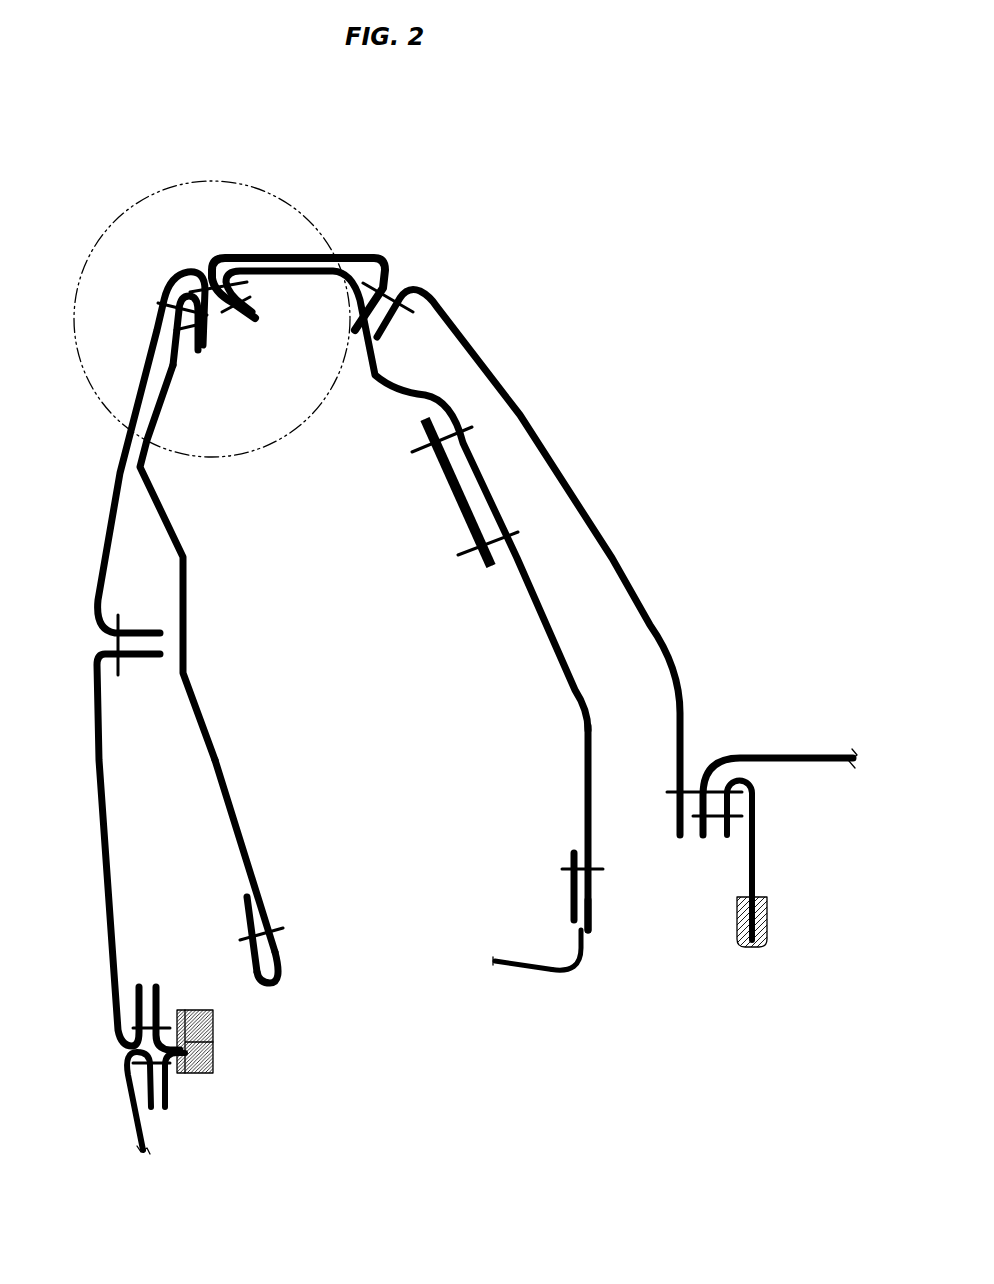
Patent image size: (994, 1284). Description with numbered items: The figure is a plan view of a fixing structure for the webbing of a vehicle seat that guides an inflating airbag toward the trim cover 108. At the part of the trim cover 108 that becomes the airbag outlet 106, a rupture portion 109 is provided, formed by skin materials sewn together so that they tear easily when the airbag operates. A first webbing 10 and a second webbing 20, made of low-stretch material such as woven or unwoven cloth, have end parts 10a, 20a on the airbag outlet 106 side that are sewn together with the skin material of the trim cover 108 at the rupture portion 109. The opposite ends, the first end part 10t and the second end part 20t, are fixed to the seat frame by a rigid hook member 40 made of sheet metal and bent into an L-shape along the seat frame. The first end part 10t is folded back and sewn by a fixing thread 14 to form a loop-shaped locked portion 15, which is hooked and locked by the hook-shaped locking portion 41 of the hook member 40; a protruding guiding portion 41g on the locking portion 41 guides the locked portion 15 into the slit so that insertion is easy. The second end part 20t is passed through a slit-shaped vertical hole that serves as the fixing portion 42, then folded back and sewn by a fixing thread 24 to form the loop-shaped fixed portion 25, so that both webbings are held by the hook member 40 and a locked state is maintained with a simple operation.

The first webbing 10 is at (201, 703).
The end part of the first webbing 10a is at (187, 366).
The first end part 10t is at (279, 826).
The fixing thread 14 is at (243, 939).
The locked portion 15 is at (306, 948).
The second webbing 20 is at (541, 620).
The end part of the second webbing 20a is at (277, 306).
The second end part 20t is at (546, 793).
The fixing thread 24 is at (597, 866).
The fixed portion 25 is at (612, 902).
The hook member 40 is at (566, 967).
The locking portion 41 is at (497, 951).
The guiding portion 41g is at (491, 976).
The fixing portion 42 is at (605, 941).
The airbag outlet 106 is at (179, 249).
The trim cover 108 is at (463, 337).
The rupture portion 109 is at (206, 260).